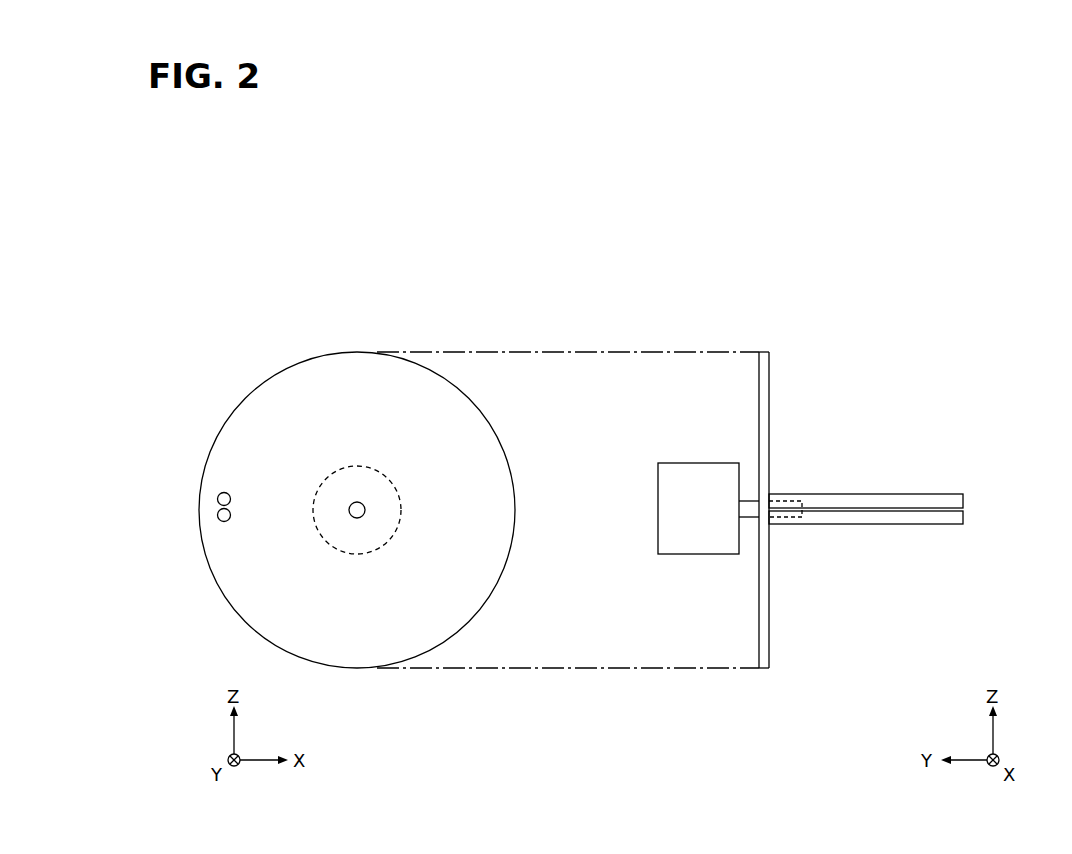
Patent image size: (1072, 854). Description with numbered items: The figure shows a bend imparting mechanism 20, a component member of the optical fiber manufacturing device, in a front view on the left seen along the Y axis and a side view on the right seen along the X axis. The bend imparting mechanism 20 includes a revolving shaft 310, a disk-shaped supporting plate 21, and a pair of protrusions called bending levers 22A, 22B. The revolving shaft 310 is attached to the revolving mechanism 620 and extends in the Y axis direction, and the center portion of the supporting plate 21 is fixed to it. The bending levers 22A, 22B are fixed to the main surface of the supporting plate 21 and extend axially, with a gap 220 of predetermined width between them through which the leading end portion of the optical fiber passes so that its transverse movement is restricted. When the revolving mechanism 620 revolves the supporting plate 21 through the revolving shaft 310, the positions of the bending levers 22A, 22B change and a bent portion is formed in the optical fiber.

The bend imparting mechanism 20 is at (232, 358).
The supporting plate 21 is at (222, 446).
The bending lever 22A is at (217, 497).
The bending lever 22B is at (217, 518).
The gap 220 is at (240, 510).
The revolving shaft 310 is at (356, 519).
The revolving mechanism 620 is at (401, 516).